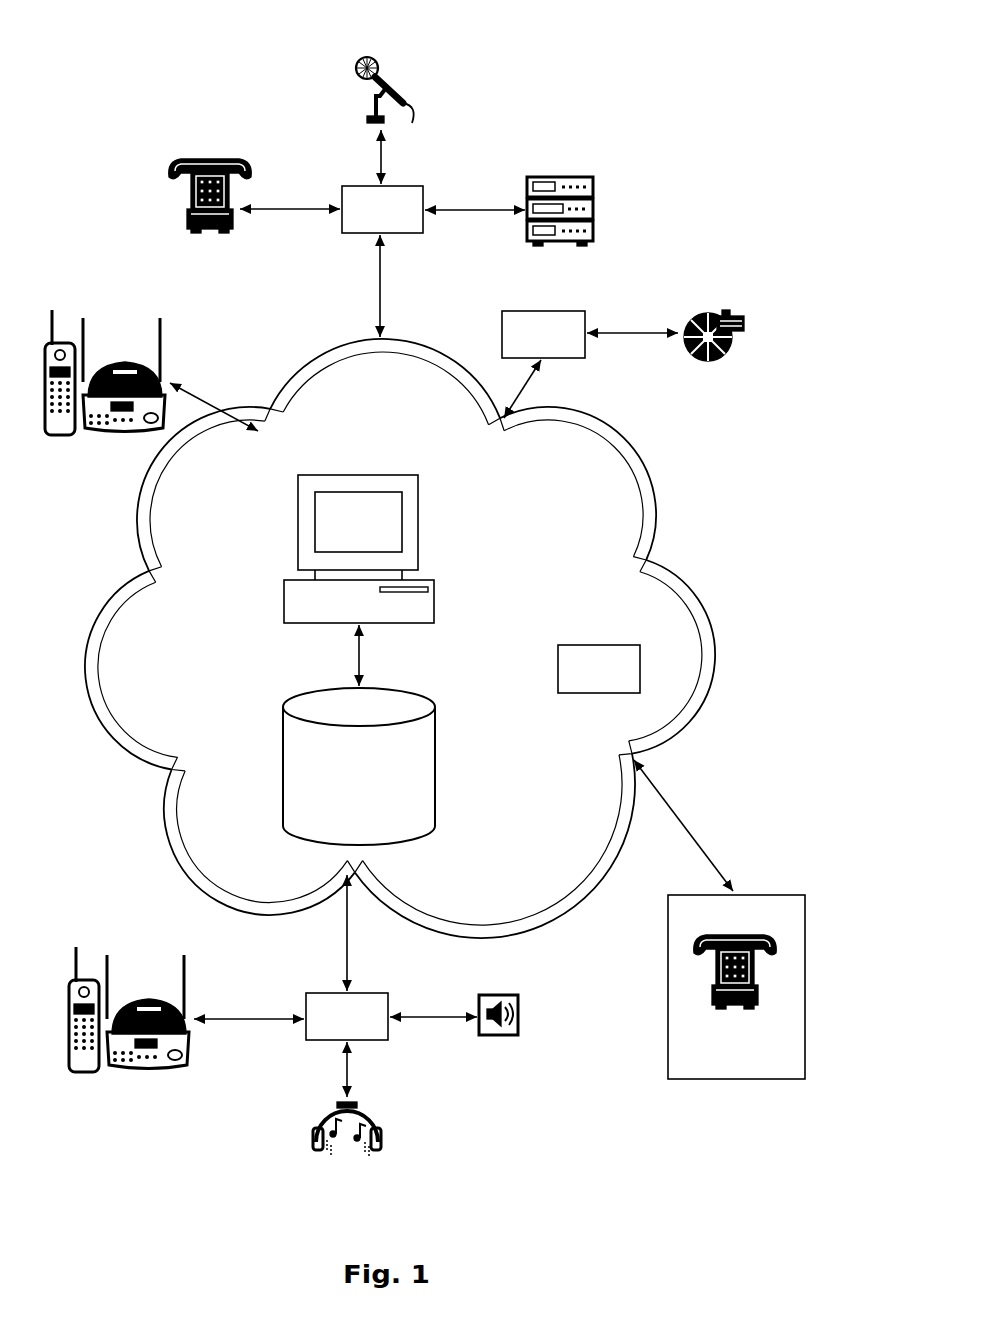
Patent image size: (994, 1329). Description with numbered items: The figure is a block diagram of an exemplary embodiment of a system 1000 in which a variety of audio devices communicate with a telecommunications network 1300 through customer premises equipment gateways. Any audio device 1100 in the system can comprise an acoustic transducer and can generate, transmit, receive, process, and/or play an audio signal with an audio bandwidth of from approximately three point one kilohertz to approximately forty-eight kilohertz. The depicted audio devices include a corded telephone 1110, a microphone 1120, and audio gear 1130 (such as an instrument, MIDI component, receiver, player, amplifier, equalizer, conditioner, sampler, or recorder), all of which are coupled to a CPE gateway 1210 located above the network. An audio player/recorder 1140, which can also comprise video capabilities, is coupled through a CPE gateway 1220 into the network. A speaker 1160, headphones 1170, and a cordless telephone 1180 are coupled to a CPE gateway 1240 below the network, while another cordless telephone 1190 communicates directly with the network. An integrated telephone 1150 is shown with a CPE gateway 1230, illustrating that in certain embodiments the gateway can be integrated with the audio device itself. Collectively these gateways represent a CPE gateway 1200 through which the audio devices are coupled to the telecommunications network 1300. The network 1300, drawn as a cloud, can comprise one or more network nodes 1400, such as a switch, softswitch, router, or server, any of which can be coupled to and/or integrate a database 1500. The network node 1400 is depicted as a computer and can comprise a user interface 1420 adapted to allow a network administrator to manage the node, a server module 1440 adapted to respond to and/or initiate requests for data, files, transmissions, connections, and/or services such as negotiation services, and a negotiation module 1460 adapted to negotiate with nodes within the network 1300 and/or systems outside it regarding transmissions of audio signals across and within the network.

The system 1000 is at (145, 34).
The audio device 1100 is at (542, 106).
The corded telephone 1110 is at (183, 196).
The microphone 1120 is at (352, 90).
The audio gear 1130 is at (596, 211).
The audio player/recorder 1140 is at (714, 356).
The integrated telephone 1150 is at (736, 987).
The speaker 1160 is at (533, 1015).
The headphones 1170 is at (385, 1129).
The cordless telephone 1180 is at (129, 1045).
The cordless telephone 1190 is at (149, 414).
The CPE gateway 1200 is at (327, 304).
The CPE gateway 1210 is at (382, 233).
The CPE gateway 1220 is at (590, 364).
The CPE gateway 1230 is at (719, 945).
The CPE gateway 1240 is at (335, 986).
The telecommunications network 1300 is at (599, 669).
The network node 1400 is at (323, 565).
The user interface 1420 is at (315, 522).
The server module 1440 is at (307, 560).
The negotiation module 1460 is at (323, 601).
The database 1500 is at (359, 766).